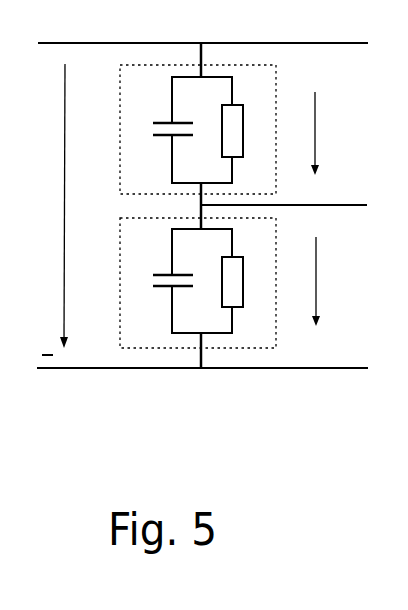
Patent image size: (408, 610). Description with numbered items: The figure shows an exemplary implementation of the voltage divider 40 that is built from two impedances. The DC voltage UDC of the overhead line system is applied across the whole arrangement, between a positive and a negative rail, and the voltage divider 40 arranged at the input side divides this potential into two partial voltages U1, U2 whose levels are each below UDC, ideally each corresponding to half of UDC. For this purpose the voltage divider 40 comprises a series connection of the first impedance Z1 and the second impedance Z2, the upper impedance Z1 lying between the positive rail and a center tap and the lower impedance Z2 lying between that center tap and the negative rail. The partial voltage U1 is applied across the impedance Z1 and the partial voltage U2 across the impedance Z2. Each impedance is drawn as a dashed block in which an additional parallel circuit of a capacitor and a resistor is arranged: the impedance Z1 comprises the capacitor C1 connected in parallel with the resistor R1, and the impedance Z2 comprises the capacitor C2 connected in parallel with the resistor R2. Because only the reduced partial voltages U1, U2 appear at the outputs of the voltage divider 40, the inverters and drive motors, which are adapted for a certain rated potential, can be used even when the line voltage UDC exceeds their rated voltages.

The voltage divider 40 is at (179, 260).
The first impedance Z1 is at (185, 129).
The second impedance Z2 is at (185, 283).
The capacitor C1 is at (160, 131).
The capacitor C2 is at (160, 283).
The resistor R1 is at (241, 131).
The resistor R2 is at (241, 282).
The partial voltage U1 is at (325, 133).
The partial voltage U2 is at (326, 281).
The DC voltage UDC is at (43, 203).